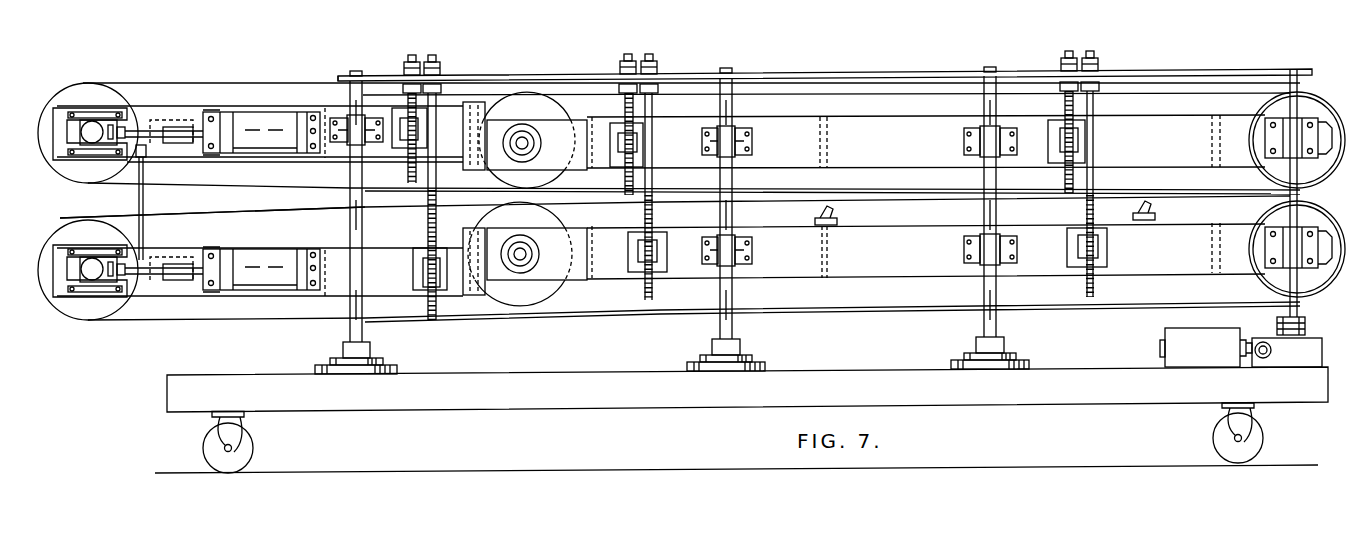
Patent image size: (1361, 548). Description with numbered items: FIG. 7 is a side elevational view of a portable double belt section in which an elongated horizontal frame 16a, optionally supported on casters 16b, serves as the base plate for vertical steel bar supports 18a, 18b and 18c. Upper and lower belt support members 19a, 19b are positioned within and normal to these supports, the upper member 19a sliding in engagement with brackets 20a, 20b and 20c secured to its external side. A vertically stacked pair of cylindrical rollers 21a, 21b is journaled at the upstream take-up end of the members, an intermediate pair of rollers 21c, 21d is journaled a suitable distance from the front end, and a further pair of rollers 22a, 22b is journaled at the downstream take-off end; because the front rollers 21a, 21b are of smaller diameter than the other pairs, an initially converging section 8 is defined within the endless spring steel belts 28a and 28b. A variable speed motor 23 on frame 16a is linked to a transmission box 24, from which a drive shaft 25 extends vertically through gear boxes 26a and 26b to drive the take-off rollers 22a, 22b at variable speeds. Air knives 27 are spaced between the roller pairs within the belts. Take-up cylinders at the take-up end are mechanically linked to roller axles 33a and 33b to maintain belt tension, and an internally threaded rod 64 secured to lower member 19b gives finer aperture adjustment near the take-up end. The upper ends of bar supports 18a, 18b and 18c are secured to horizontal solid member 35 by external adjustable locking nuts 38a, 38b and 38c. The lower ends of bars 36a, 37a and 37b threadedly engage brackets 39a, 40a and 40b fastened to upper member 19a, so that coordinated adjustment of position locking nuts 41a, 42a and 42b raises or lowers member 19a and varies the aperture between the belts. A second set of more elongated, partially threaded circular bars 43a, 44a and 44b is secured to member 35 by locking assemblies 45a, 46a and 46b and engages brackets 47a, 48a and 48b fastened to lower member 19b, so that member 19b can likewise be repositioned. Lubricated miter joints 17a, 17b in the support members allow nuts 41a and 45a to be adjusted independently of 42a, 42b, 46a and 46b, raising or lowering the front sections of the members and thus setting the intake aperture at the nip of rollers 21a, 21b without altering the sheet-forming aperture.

The converging section 8 is at (247, 207).
The horizontal frame 16a is at (640, 400).
The casters 16b is at (214, 448).
The lubricated miter joint 17a is at (476, 98).
The lubricated miter joint 17b is at (477, 297).
The vertical steel bar support 18a is at (351, 340).
The vertical steel bar support 18b is at (720, 332).
The vertical steel bar support 18c is at (984, 330).
The upper belt support member 19a is at (877, 150).
The lower belt support member 19b is at (912, 262).
The bracket 20a is at (333, 110).
The bracket 20b is at (702, 145).
The bracket 20c is at (962, 145).
The cylindrical roller 21a is at (50, 110).
The cylindrical roller 21b is at (48, 262).
The intermediate cylindrical roller 21c is at (537, 118).
The intermediate cylindrical roller 21d is at (537, 300).
The take-off roller 22a is at (1320, 95).
The take-off roller 22b is at (1304, 283).
The variable speed motor 23 is at (1170, 330).
The transmission box 24 is at (1295, 357).
The drive shaft 25 is at (1277, 322).
The gear box 26a is at (1290, 139).
The gear box 26b is at (1290, 249).
The air knife 27 is at (815, 213).
The endless spring steel belt 28a is at (197, 82).
The endless spring steel belt 28b is at (178, 320).
The take-off roller axle 33a is at (55, 137).
The take-off roller axle 33b is at (55, 282).
The horizontal solid member 35 is at (850, 74).
The bar 36a is at (411, 163).
The bar 37a is at (621, 106).
The bar 37b is at (1063, 108).
The external adjustable locking nut 38a is at (356, 71).
The external adjustable locking nut 38b is at (733, 68).
The external adjustable locking nut 38c is at (990, 67).
The bracket 39a is at (408, 133).
The bracket 40a is at (625, 150).
The bracket 40b is at (1067, 150).
The position locking nut 41a is at (410, 56).
The position locking nut 42a is at (628, 55).
The position locking nut 42b is at (1069, 51).
The threaded circular bar 43a is at (430, 214).
The threaded circular bar 44a is at (650, 188).
The threaded circular bar 44b is at (1094, 186).
The locking assembly 45a is at (433, 57).
The locking assembly 46a is at (650, 57).
The locking assembly 46b is at (1092, 57).
The bracket 47a is at (429, 275).
The bracket 48a is at (646, 255).
The bracket 48b is at (1080, 262).
The internally threaded rod 64 is at (142, 243).